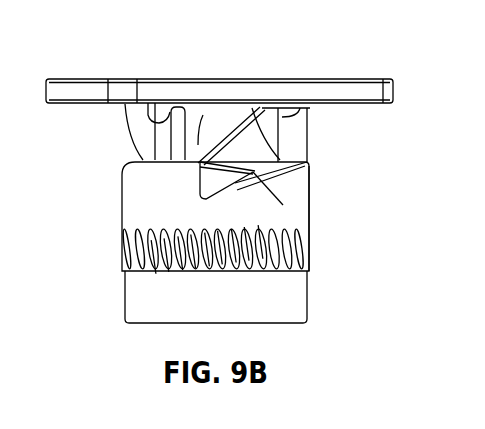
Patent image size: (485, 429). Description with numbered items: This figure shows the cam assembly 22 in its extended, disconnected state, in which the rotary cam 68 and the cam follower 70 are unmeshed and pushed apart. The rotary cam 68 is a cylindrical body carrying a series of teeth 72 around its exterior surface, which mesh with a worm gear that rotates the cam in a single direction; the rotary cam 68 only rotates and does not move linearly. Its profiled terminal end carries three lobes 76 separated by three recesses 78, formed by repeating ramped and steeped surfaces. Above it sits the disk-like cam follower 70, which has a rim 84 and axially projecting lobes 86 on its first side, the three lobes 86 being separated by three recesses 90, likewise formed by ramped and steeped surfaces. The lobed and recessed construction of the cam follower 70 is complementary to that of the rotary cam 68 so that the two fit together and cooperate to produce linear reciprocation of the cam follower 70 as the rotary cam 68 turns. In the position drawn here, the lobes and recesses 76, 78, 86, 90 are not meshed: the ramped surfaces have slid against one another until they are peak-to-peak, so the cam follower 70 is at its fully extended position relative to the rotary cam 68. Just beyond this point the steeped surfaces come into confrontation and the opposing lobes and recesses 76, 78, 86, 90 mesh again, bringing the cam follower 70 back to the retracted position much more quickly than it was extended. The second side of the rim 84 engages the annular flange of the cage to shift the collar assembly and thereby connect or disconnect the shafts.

The cam assembly 22 is at (322, 172).
The rotary cam 68 is at (122, 198).
The cam follower 70 is at (200, 79).
The teeth 72 is at (142, 248).
The lobes 76 is at (193, 167).
The recesses 78 is at (283, 205).
The rim 84 is at (76, 92).
The lobes 86 is at (203, 115).
The recesses 90 is at (148, 103).